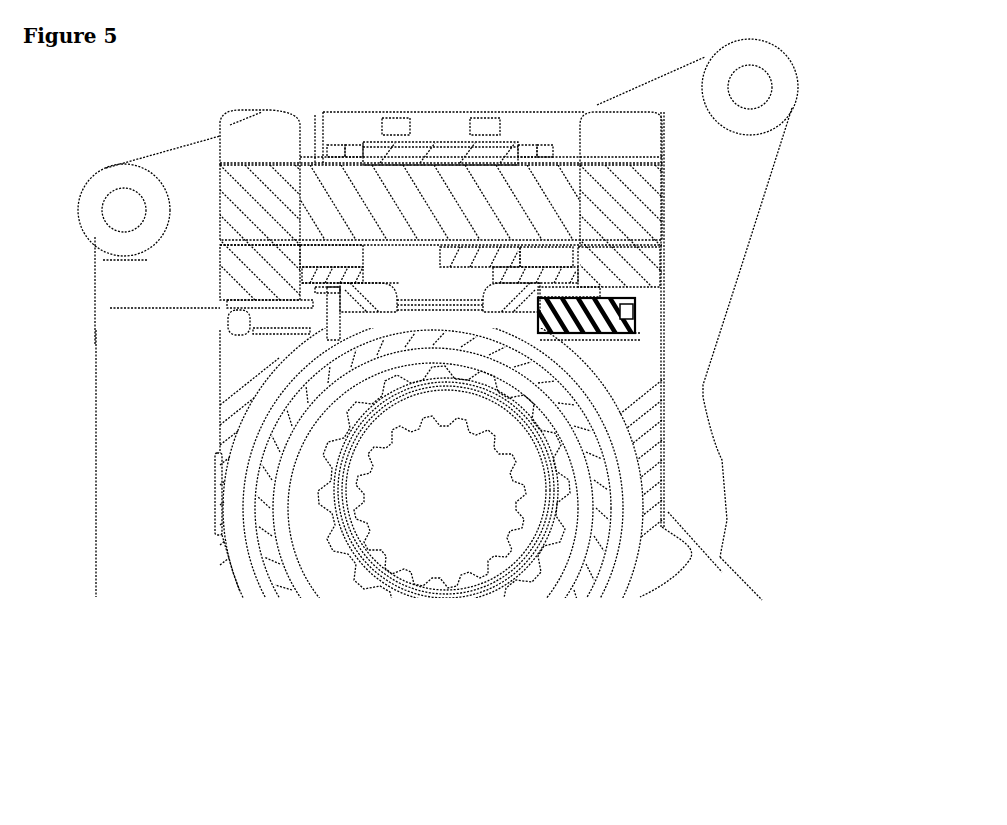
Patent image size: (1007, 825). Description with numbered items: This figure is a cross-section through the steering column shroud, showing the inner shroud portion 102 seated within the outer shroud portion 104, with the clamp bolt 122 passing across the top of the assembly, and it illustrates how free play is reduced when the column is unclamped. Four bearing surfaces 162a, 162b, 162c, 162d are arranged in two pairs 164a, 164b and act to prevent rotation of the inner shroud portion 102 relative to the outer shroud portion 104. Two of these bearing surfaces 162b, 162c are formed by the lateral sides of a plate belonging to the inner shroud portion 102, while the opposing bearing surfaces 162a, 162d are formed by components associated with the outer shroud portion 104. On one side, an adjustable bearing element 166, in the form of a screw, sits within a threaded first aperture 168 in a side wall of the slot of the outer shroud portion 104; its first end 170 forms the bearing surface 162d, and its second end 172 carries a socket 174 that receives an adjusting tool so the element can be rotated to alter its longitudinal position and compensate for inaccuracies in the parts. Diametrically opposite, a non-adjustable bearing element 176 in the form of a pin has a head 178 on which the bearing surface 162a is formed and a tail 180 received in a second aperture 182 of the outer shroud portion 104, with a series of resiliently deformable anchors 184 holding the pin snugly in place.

The inner shroud portion 102 is at (614, 568).
The outer shroud portion 104 is at (236, 578).
The clamp bolt 122 is at (442, 162).
The bearing surface 162a is at (341, 345).
The bearing surface 162b is at (348, 322).
The bearing surface 162c is at (539, 332).
The bearing surface 162d is at (546, 312).
The pair of bearing surfaces 164a is at (340, 277).
The pair of bearing surfaces 164b is at (540, 276).
The adjustable bearing element 166 is at (636, 300).
The first aperture 168 is at (610, 336).
The first end 170 is at (553, 297).
The second end 172 is at (617, 291).
The socket 174 is at (634, 318).
The non-adjustable bearing element 176 is at (243, 325).
The head 178 is at (328, 310).
The tail 180 is at (258, 313).
The second aperture 182 is at (275, 298).
The anchors 184 is at (268, 342).